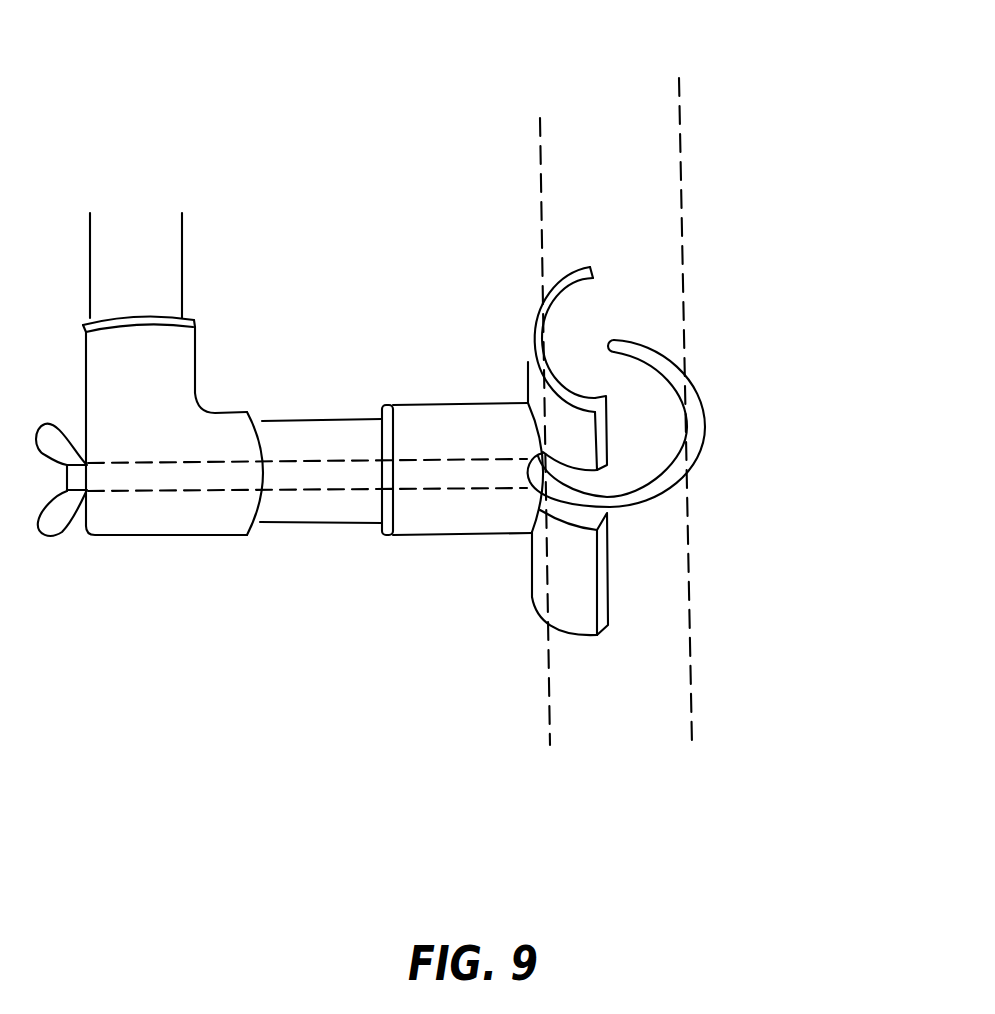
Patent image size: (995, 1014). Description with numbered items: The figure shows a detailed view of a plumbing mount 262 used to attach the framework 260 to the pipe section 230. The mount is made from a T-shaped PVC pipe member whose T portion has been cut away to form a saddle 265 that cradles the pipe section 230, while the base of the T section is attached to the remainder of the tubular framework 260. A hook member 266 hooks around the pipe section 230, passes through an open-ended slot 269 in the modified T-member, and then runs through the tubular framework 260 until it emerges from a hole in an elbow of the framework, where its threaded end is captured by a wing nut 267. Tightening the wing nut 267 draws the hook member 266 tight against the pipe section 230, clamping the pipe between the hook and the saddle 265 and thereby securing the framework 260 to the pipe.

The pipe section 230 is at (638, 182).
The framework 260 is at (172, 257).
The plumbing mount 262 is at (468, 357).
The saddle 265 is at (553, 587).
The hook member 266 is at (698, 413).
The wing nut 267 is at (57, 525).
The open-ended slot 269 is at (597, 487).